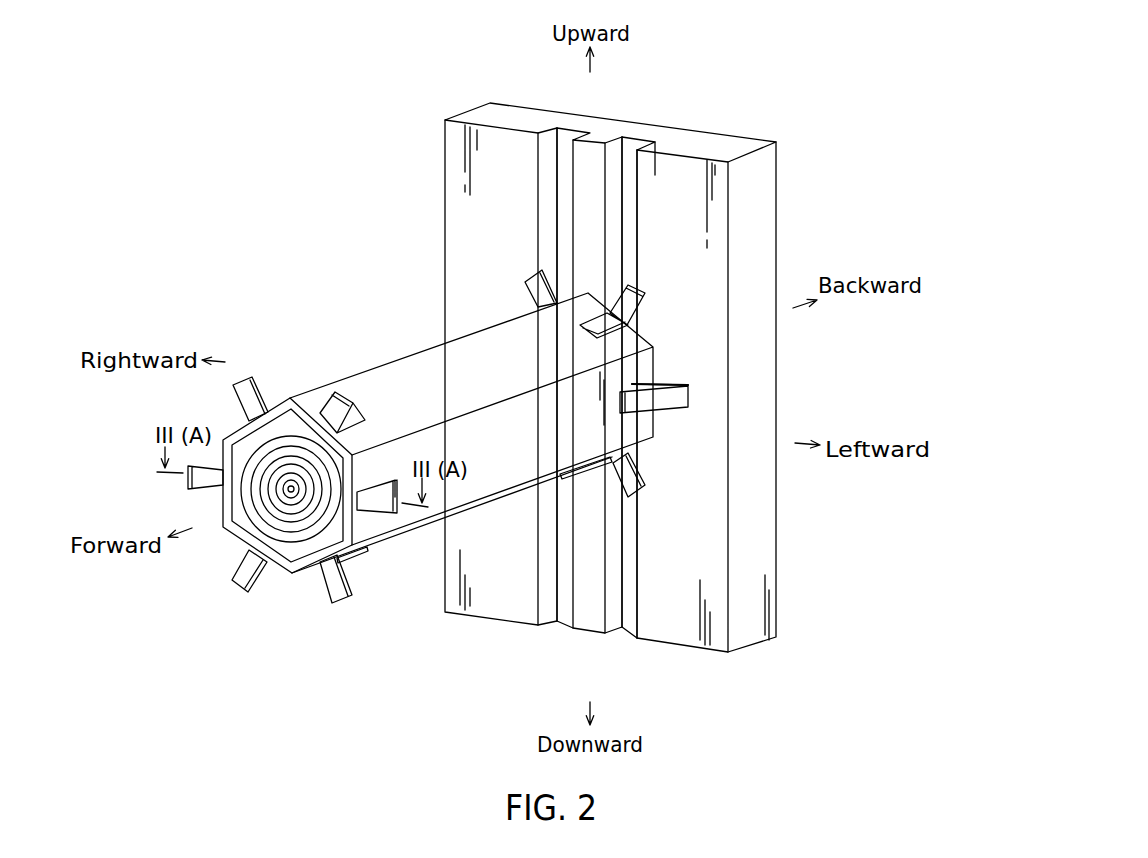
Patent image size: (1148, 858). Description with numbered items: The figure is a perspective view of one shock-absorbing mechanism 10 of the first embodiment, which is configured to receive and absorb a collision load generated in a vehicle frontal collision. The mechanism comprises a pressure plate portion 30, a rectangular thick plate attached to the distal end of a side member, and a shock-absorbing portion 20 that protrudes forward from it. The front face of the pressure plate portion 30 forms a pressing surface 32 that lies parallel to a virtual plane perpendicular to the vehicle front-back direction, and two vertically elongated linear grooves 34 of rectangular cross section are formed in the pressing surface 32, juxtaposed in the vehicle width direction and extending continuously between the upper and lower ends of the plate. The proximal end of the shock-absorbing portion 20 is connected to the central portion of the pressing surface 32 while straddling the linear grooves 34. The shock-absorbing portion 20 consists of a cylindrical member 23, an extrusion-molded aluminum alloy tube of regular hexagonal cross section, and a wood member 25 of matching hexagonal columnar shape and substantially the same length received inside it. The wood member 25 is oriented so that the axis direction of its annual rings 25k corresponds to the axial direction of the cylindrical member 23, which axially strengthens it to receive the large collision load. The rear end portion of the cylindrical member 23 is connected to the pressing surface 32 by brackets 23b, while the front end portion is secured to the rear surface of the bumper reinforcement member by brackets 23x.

The shock-absorbing mechanism 10 is at (497, 379).
The shock-absorbing portion 20 is at (497, 461).
The cylindrical member 23 is at (530, 433).
The bracket 23x is at (250, 398).
The bracket 23b is at (638, 403).
The wood member 25 is at (249, 544).
The annual rings 25k is at (252, 515).
The pressure plate portion 30 is at (610, 379).
The pressing surface 32 is at (648, 197).
The linear groove 34 is at (557, 590).